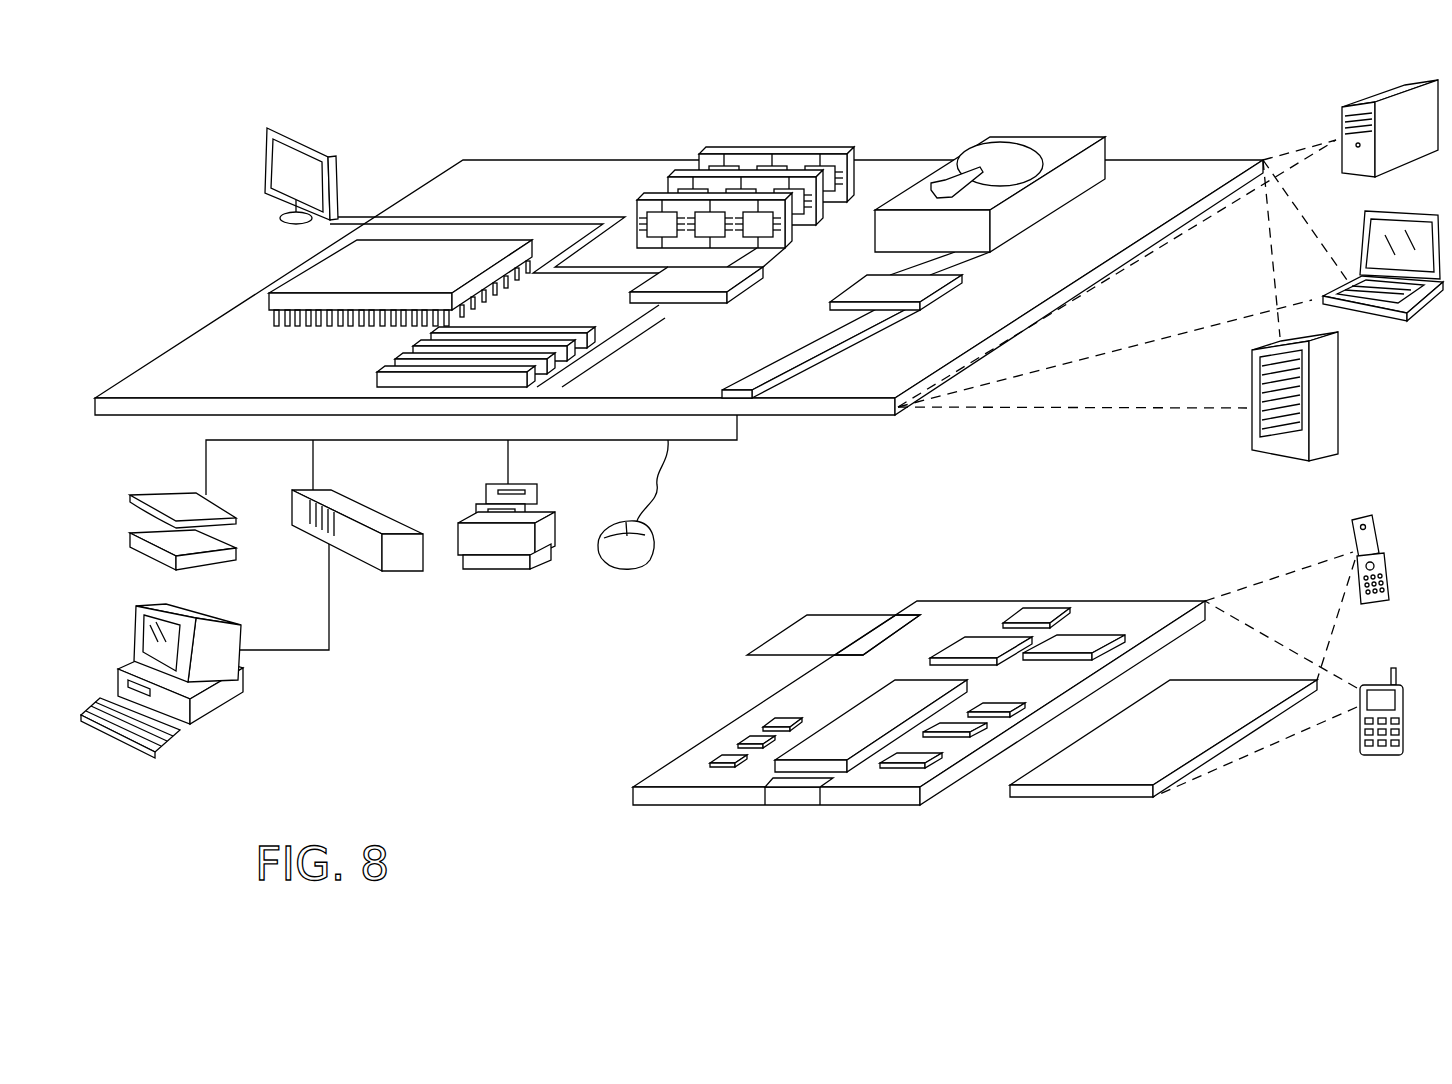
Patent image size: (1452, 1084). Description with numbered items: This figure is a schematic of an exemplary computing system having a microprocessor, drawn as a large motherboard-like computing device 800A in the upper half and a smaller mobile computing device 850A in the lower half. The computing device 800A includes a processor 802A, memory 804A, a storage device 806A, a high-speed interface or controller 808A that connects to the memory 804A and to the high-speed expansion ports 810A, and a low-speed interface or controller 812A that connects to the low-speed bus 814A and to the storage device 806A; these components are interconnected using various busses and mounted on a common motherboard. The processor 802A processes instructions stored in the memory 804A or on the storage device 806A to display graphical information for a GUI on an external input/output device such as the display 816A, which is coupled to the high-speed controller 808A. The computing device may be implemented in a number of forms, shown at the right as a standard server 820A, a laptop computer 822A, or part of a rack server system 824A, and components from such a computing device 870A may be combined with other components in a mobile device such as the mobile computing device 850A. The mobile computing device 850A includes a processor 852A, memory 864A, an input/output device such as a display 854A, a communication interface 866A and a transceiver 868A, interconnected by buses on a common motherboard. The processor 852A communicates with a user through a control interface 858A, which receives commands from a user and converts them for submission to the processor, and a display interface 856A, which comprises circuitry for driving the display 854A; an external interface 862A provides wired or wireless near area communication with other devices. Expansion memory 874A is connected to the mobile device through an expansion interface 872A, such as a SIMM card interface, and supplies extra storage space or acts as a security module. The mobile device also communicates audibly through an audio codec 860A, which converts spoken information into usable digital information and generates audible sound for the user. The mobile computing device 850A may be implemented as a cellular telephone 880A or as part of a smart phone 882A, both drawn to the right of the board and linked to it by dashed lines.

The computing device 800A is at (409, 103).
The processor 802A is at (294, 272).
The memory 804A is at (783, 153).
The storage device 806A is at (1036, 135).
The high-speed interface or controller 808A is at (710, 275).
The high-speed expansion ports 810A is at (406, 358).
The low-speed interface or controller 812A is at (867, 283).
The low-speed bus 814A is at (742, 386).
The display 816A is at (274, 127).
The standard server 820A is at (1353, 100).
The laptop computer 822A is at (1425, 212).
The rack server system 824A is at (1342, 398).
The mobile computing device 850A is at (584, 811).
The processor 852A is at (837, 733).
The display 854A is at (1203, 698).
The display interface 856A is at (905, 758).
The control interface 858A is at (963, 732).
The audio codec 860A is at (992, 700).
The external interface 862A is at (795, 790).
The memory 864A is at (738, 742).
The communication interface 866A is at (980, 638).
The transceiver 868A is at (1080, 636).
The computing device 870A is at (1037, 610).
The expansion interface 872A is at (897, 615).
The expansion memory 874A is at (808, 615).
The cellular telephone 880A is at (1356, 517).
The smart phone 882A is at (1374, 683).